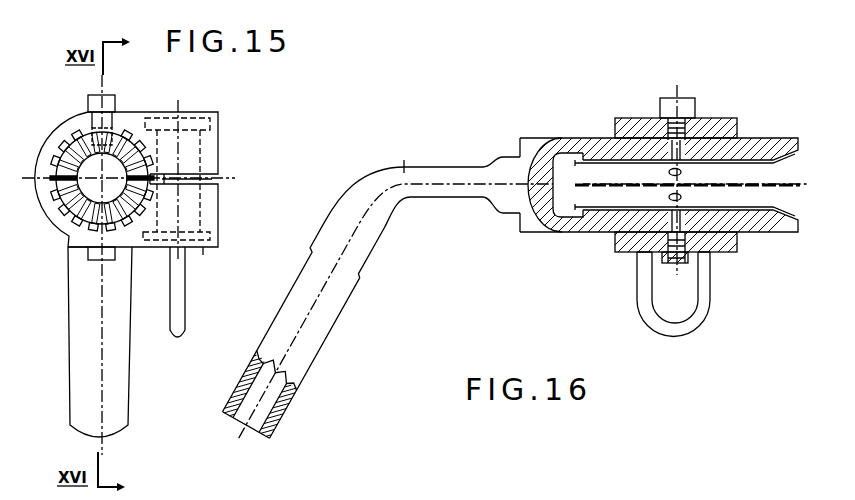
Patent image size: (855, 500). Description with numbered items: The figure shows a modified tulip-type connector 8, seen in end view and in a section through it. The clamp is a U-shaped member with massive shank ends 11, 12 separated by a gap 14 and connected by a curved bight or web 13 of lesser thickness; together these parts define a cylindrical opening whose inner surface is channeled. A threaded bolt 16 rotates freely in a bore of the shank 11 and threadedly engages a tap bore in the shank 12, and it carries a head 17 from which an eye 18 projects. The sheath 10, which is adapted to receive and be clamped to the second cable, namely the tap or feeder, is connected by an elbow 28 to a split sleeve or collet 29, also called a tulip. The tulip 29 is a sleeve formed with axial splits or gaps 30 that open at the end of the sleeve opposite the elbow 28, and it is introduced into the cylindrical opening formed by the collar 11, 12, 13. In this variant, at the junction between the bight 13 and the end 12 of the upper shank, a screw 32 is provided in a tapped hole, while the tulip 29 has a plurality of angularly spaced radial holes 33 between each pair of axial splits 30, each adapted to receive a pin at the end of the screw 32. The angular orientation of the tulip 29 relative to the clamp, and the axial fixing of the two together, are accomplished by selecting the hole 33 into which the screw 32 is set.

In FIG. 15, the surgical instrument assembly 8 is at (234, 209).
In FIG. 16, the surgical instrument assembly 8 is at (465, 138).
In FIG. 15, the sheath 10 is at (120, 391).
In FIG. 16, the sheath 10 is at (323, 342).
In FIG. 15, the shank end 11 is at (213, 216).
In FIG. 16, the shank end 11 is at (730, 244).
In FIG. 15, the shank end 12 is at (213, 143).
In FIG. 16, the shank end 12 is at (632, 118).
In FIG. 15, the bight 13 is at (52, 208).
In FIG. 15, the gap 14 is at (214, 177).
In FIG. 15, the threaded bolt 16 is at (196, 155).
In FIG. 15, the head 17 is at (205, 252).
In FIG. 16, the head 17 is at (637, 254).
In FIG. 15, the eye 18 is at (182, 312).
In FIG. 16, the eye 18 is at (698, 322).
In FIG. 16, the elbow 28 is at (404, 160).
In FIG. 15, the tulip 29 is at (62, 242).
In FIG. 16, the tulip 29 is at (588, 224).
In FIG. 15, the axial splits 30 is at (90, 133).
In FIG. 16, the axial splits 30 is at (750, 180).
In FIG. 15, the screw 32 is at (115, 106).
In FIG. 16, the screw 32 is at (688, 102).
In FIG. 15, the radial holes 33 is at (58, 149).
In FIG. 16, the radial holes 33 is at (675, 201).